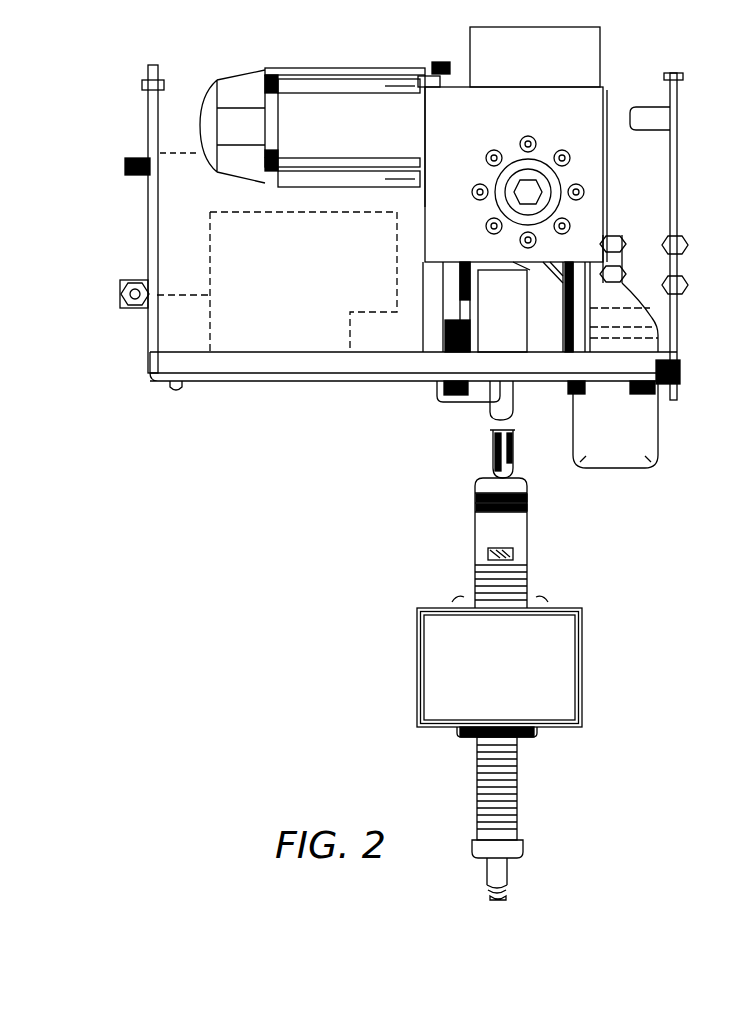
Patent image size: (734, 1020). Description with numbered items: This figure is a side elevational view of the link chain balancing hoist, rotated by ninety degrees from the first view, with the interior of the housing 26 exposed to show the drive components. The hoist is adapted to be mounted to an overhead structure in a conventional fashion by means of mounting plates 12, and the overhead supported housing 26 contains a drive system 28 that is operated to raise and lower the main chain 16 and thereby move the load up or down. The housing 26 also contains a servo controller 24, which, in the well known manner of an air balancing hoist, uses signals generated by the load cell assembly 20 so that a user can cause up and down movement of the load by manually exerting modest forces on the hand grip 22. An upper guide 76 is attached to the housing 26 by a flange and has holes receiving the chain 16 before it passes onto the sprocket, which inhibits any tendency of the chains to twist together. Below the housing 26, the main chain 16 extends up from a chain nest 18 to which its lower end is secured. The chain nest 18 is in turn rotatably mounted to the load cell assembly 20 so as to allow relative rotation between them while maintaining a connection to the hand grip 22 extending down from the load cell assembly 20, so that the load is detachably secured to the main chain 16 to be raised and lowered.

The mounting plate 12 is at (596, 62).
The drive system 28 is at (408, 56).
The housing 26 is at (146, 231).
The servo controller 24 is at (230, 320).
The upper guide 76 is at (497, 320).
The main chain 16 is at (512, 445).
The chain nest 18 is at (520, 537).
The load cell assembly 20 is at (582, 672).
The hand grip 22 is at (517, 798).